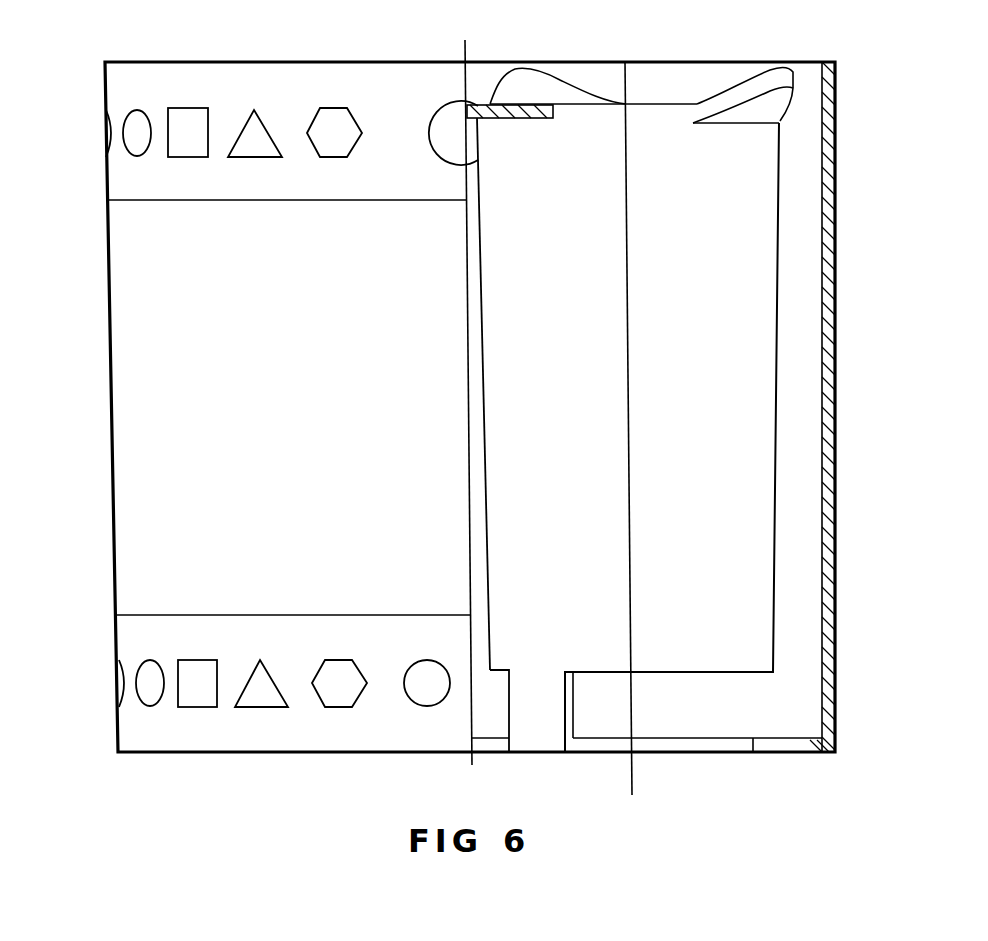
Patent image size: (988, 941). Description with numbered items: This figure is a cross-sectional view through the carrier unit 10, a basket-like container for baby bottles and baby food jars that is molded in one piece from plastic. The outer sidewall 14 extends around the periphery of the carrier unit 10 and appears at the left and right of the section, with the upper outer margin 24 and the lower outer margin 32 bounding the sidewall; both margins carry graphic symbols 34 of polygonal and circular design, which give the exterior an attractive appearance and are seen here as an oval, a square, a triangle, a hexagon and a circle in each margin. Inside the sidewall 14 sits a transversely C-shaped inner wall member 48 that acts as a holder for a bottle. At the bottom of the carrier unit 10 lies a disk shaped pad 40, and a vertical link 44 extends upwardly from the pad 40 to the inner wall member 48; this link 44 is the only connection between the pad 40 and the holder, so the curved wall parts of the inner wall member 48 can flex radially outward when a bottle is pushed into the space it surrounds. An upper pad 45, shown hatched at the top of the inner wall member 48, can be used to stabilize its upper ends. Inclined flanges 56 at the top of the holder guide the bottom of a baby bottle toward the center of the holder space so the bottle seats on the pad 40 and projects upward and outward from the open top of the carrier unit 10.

The carrier unit 10 is at (110, 400).
The outer sidewall 14 is at (835, 401).
The upper outer margin 24 is at (387, 190).
The lower outer margin 32 is at (308, 628).
The graphic symbols 34 is at (198, 150).
The disk shaped pad 40 is at (740, 738).
The vertical link 44 is at (535, 707).
The upper pad 45 is at (557, 112).
The inner wall member 48 is at (730, 368).
The inclined flange 56 is at (557, 87).